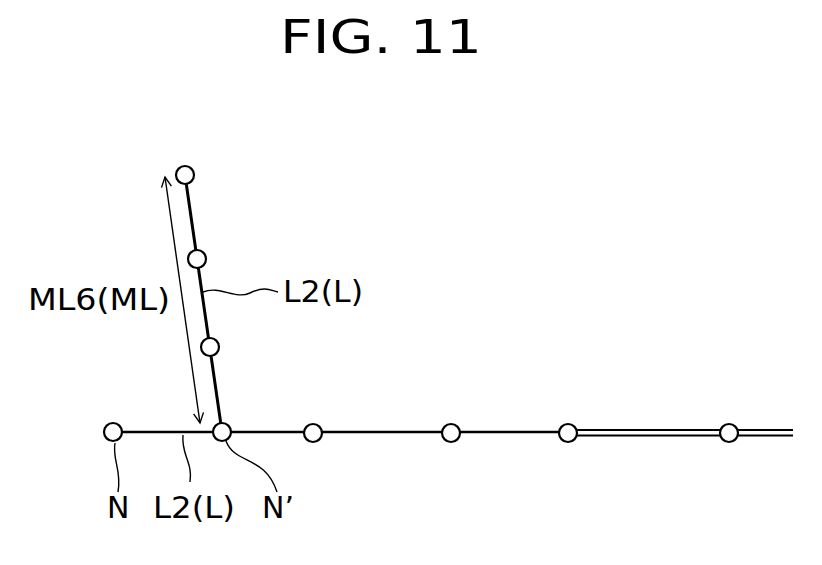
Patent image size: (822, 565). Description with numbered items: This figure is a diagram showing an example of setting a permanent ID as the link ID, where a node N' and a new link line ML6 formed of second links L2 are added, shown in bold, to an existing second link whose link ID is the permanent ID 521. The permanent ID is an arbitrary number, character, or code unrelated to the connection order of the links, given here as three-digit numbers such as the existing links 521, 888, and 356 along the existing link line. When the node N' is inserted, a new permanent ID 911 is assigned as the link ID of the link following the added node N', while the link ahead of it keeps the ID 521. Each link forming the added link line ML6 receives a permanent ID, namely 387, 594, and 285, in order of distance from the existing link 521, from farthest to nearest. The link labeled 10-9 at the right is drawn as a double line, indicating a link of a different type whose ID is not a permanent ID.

The permanent ID of a link of added link line ML6 387 is at (207, 167).
The permanent ID of a link of added link line ML6 594 is at (219, 250).
The permanent ID of a link of added link line ML6 285 is at (233, 336).
The link ID of existing second link 521 is at (132, 421).
The new permanent ID of link subsequent to added node 911 is at (241, 421).
The permanent ID of a second link 888 is at (332, 422).
The permanent ID of a second link 356 is at (472, 422).
The node 10-9 is at (594, 421).